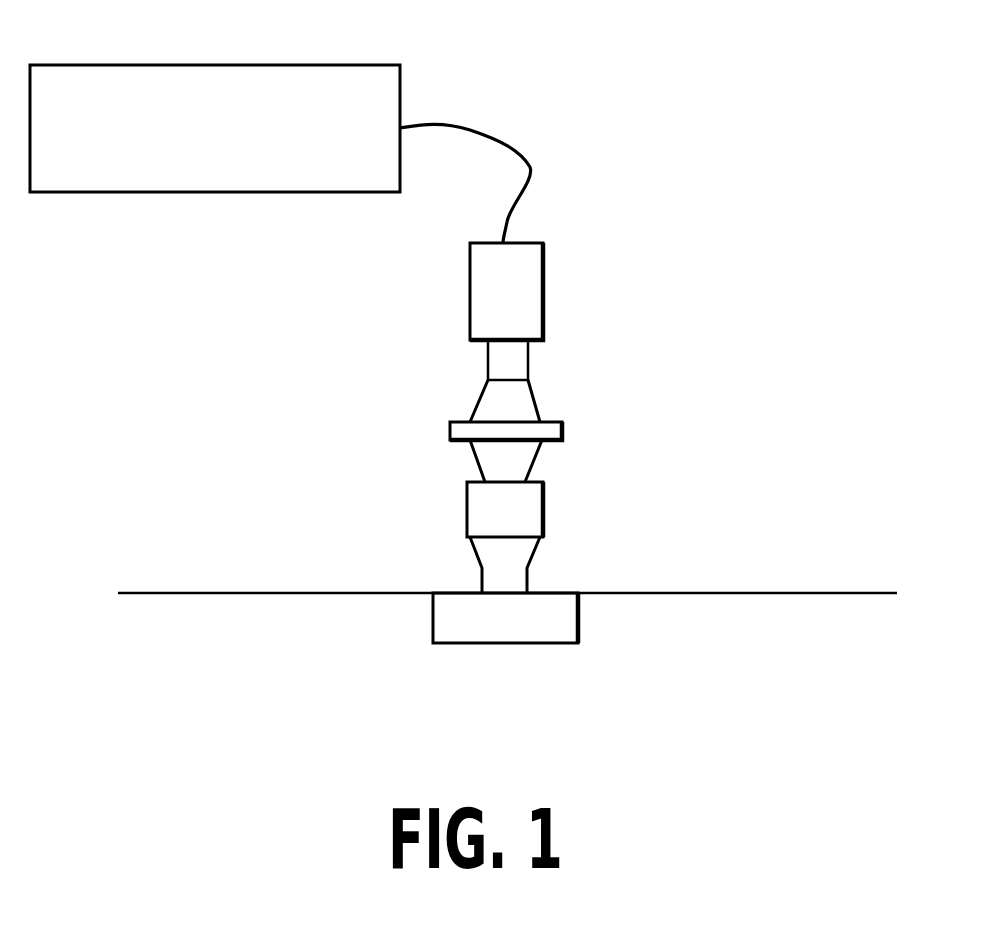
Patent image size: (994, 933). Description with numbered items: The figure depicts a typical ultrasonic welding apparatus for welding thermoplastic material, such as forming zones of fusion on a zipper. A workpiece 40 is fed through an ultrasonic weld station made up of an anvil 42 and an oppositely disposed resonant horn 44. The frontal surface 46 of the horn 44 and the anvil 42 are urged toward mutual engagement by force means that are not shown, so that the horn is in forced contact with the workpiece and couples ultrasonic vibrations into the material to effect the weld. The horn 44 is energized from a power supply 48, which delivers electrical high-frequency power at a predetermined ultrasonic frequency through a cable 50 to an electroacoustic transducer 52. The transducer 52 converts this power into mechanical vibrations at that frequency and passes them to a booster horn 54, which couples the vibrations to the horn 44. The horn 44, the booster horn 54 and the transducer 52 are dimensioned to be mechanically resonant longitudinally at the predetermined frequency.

The workpiece 40 is at (205, 595).
The anvil 42 is at (582, 620).
The resonant horn 44 is at (467, 510).
The frontal surface 46 is at (497, 593).
The power supply 48 is at (400, 93).
The cable 50 is at (517, 148).
The electroacoustic transducer 52 is at (470, 300).
The booster horn 54 is at (452, 430).